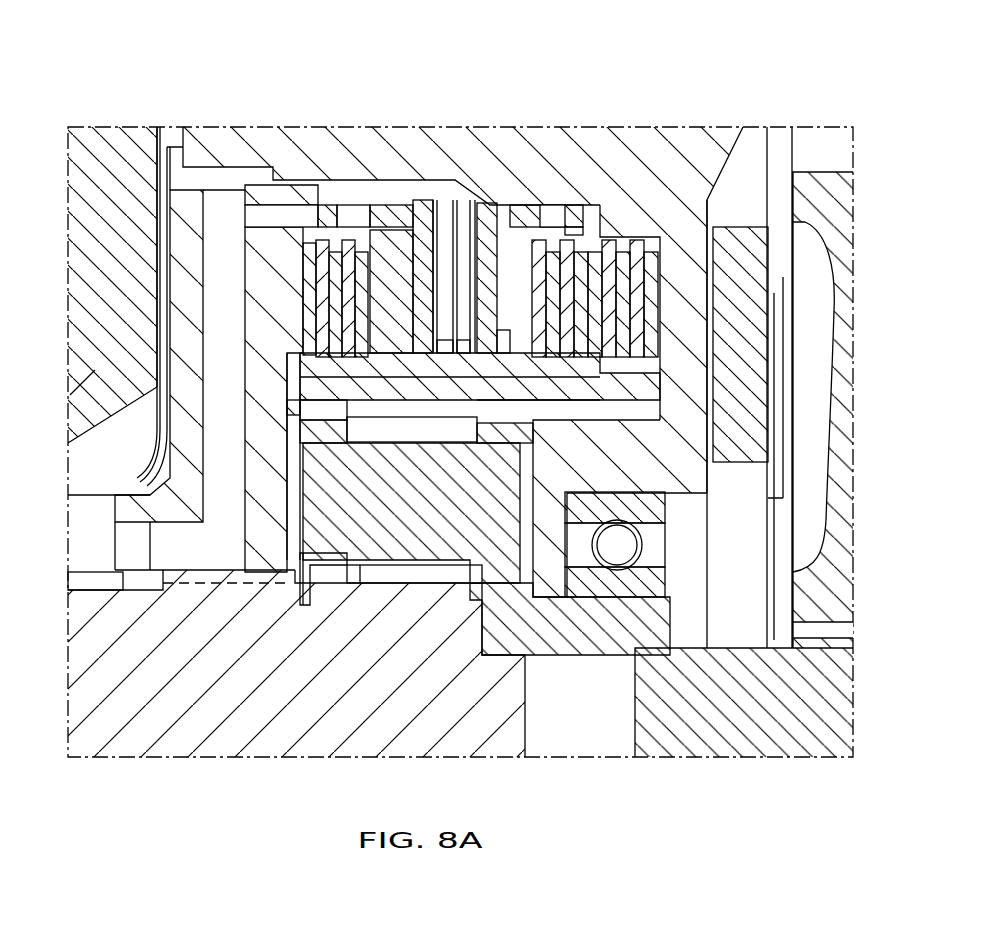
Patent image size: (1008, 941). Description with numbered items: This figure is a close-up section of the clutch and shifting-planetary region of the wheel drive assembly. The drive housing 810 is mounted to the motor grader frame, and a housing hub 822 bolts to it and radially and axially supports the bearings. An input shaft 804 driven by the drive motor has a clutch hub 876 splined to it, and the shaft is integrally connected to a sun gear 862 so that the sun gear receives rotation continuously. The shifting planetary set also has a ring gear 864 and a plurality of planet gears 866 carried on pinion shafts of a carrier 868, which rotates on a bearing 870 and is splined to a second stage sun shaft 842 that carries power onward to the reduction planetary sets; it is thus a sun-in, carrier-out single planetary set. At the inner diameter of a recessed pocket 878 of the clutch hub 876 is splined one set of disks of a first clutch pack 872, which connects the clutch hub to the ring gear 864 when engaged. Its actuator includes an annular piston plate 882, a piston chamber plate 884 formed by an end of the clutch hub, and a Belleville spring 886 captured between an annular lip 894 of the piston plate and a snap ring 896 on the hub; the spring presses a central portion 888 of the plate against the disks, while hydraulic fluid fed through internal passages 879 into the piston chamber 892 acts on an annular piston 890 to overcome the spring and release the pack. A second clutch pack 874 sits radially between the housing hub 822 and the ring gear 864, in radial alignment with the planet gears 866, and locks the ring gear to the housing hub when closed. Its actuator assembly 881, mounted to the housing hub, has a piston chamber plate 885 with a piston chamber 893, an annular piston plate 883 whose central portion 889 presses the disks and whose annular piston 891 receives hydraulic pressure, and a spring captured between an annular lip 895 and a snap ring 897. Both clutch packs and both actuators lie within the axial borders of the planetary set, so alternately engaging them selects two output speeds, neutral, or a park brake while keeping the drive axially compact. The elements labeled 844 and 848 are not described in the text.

The input shaft 804 is at (237, 688).
The drive housing 810 is at (253, 137).
The housing hub 822 is at (678, 140).
The second stage sun shaft 842 is at (771, 732).
The right housing wall 844 is at (845, 185).
The shaft 848 is at (740, 255).
The sun gear 862 is at (360, 605).
The ring gear 864 is at (310, 390).
The planet gears 866 is at (373, 430).
The carrier 868 is at (553, 637).
The bearing 870 is at (655, 518).
The clutch pack 872 is at (353, 278).
The clutch pack 874 is at (600, 295).
The clutch hub 876 is at (150, 490).
The recessed pocket 878 is at (445, 215).
The internal passages 879 is at (218, 200).
The actuator assembly 881 is at (328, 190).
The annular piston plate 882 is at (426, 228).
The annular piston plate 883 is at (520, 208).
The piston chamber plate 884 is at (373, 203).
The piston chamber plate 885 is at (557, 205).
The spring 886 is at (472, 233).
The central portion 888 is at (383, 340).
The central portion 889 is at (517, 337).
The annular piston 890 is at (402, 203).
The annular piston 891 is at (565, 228).
The piston chamber 892 is at (312, 192).
The piston chamber 893 is at (578, 225).
The annular lip 894 is at (403, 350).
The annular lip 895 is at (497, 332).
The snap ring 896 is at (443, 352).
The snap ring 897 is at (470, 345).